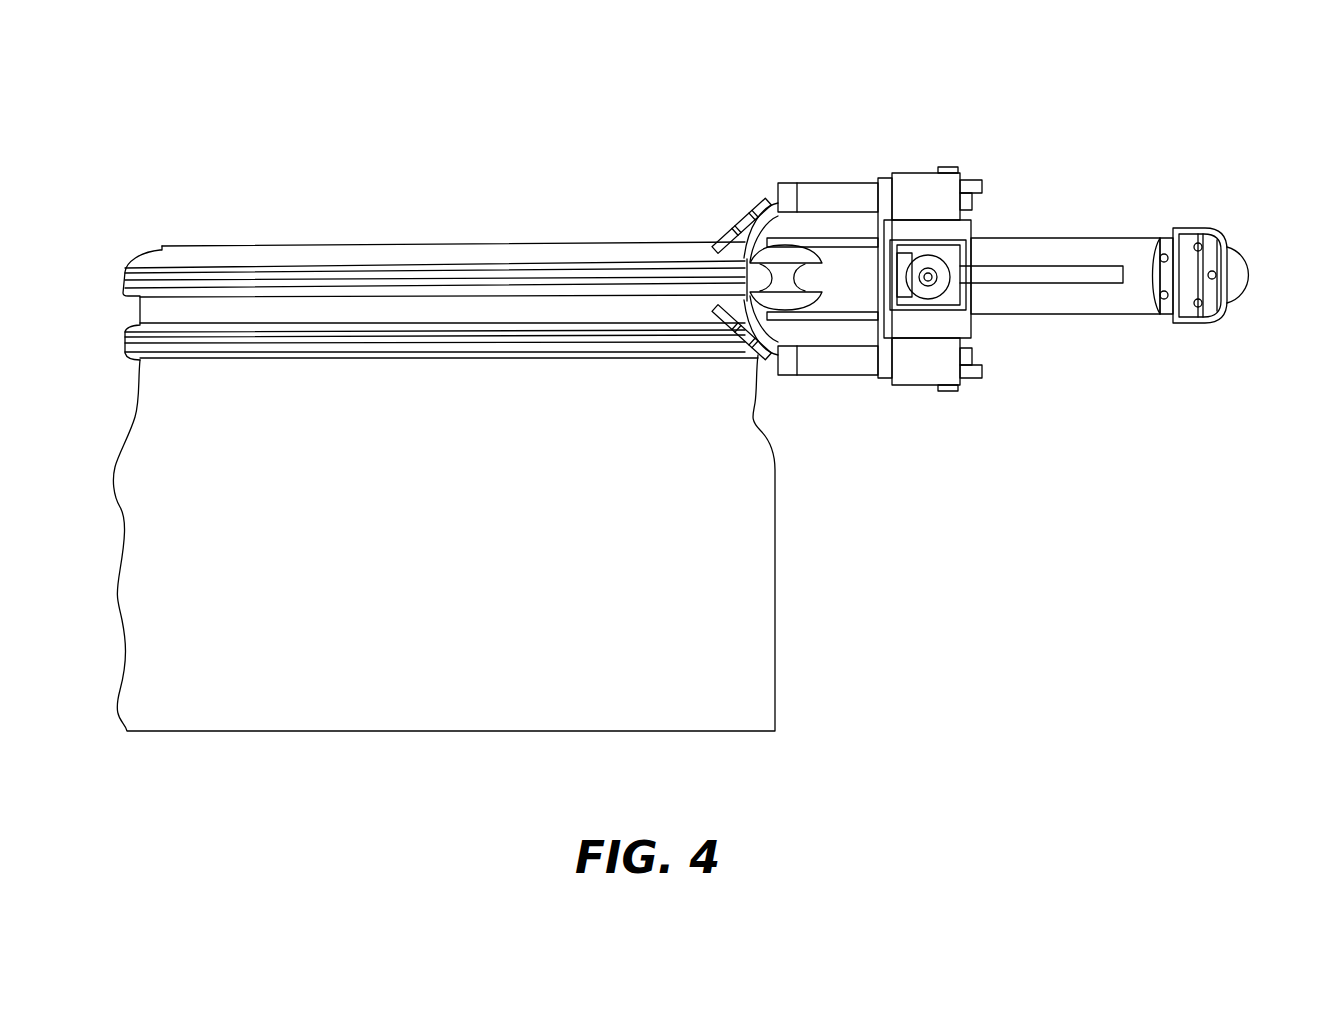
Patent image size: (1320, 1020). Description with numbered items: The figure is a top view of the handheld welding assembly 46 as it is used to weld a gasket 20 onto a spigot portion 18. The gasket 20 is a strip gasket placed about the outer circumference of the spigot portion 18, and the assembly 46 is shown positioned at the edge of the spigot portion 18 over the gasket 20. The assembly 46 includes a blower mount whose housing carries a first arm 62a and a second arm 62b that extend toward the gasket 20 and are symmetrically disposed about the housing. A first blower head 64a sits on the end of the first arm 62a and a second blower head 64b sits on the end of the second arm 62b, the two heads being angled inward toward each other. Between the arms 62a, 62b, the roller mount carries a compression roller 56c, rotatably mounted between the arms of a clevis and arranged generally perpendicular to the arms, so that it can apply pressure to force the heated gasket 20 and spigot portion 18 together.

The spigot portion 18 is at (135, 507).
The gasket 20 is at (140, 358).
The assembly 46 is at (872, 155).
The first arm 62a is at (817, 190).
The second arm 62b is at (805, 366).
The first blower head 64a is at (737, 220).
The second blower head 64b is at (730, 348).
The compression roller 56c is at (798, 303).